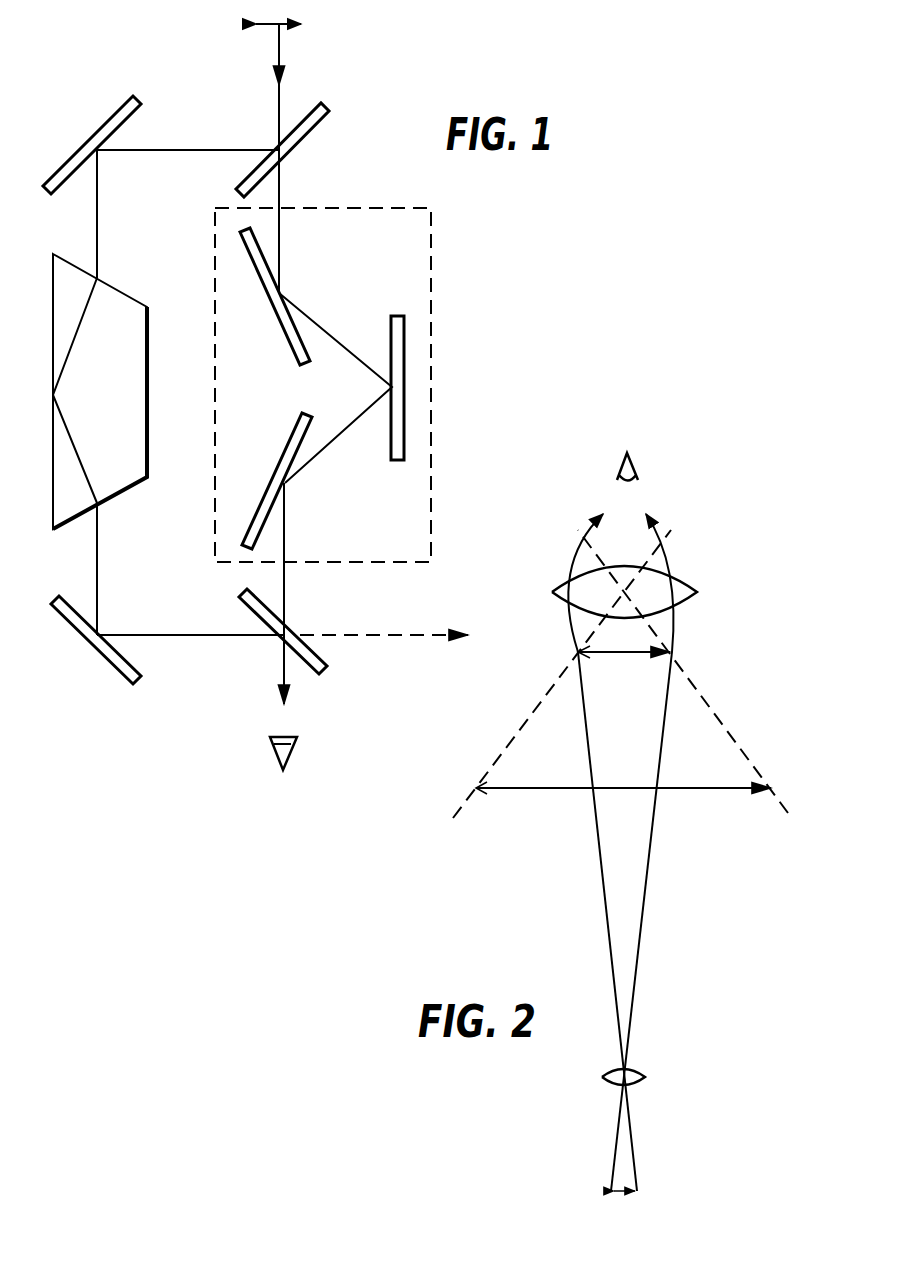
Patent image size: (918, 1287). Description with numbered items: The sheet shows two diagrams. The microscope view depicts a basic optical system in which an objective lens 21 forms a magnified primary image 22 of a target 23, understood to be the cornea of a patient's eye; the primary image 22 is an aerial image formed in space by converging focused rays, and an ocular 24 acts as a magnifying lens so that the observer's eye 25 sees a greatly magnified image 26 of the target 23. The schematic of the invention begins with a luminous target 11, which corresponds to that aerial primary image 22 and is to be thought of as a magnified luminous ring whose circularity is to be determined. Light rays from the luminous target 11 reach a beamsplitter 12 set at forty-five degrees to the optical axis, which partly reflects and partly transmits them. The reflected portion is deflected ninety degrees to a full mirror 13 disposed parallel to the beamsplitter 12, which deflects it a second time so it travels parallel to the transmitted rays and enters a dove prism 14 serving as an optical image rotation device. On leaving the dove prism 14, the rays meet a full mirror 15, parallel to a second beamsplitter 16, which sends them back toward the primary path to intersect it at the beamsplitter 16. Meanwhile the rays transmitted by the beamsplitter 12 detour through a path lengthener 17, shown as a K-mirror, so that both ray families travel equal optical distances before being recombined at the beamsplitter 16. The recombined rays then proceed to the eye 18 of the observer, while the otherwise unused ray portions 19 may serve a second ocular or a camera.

In FIG. 1, the luminous target 11 is at (302, 22).
In FIG. 1, the beamsplitter 12 is at (322, 124).
In FIG. 1, the full mirror 13 is at (98, 116).
In FIG. 1, the dove prism 14 is at (133, 318).
In FIG. 1, the full mirror 15 is at (122, 660).
In FIG. 1, the beamsplitter 16 is at (244, 596).
In FIG. 1, the path lengthener 17 is at (432, 392).
In FIG. 1, the eye 18 is at (290, 745).
In FIG. 1, the unused light-ray portions 19 is at (420, 636).
In FIG. 2, the objective lens 21 is at (640, 1077).
In FIG. 2, the magnified primary image 22 is at (680, 656).
In FIG. 2, the target 23 is at (634, 1192).
In FIG. 2, the ocular 24 is at (670, 578).
In FIG. 2, the eye 25 is at (631, 457).
In FIG. 2, the magnified image 26 is at (718, 790).